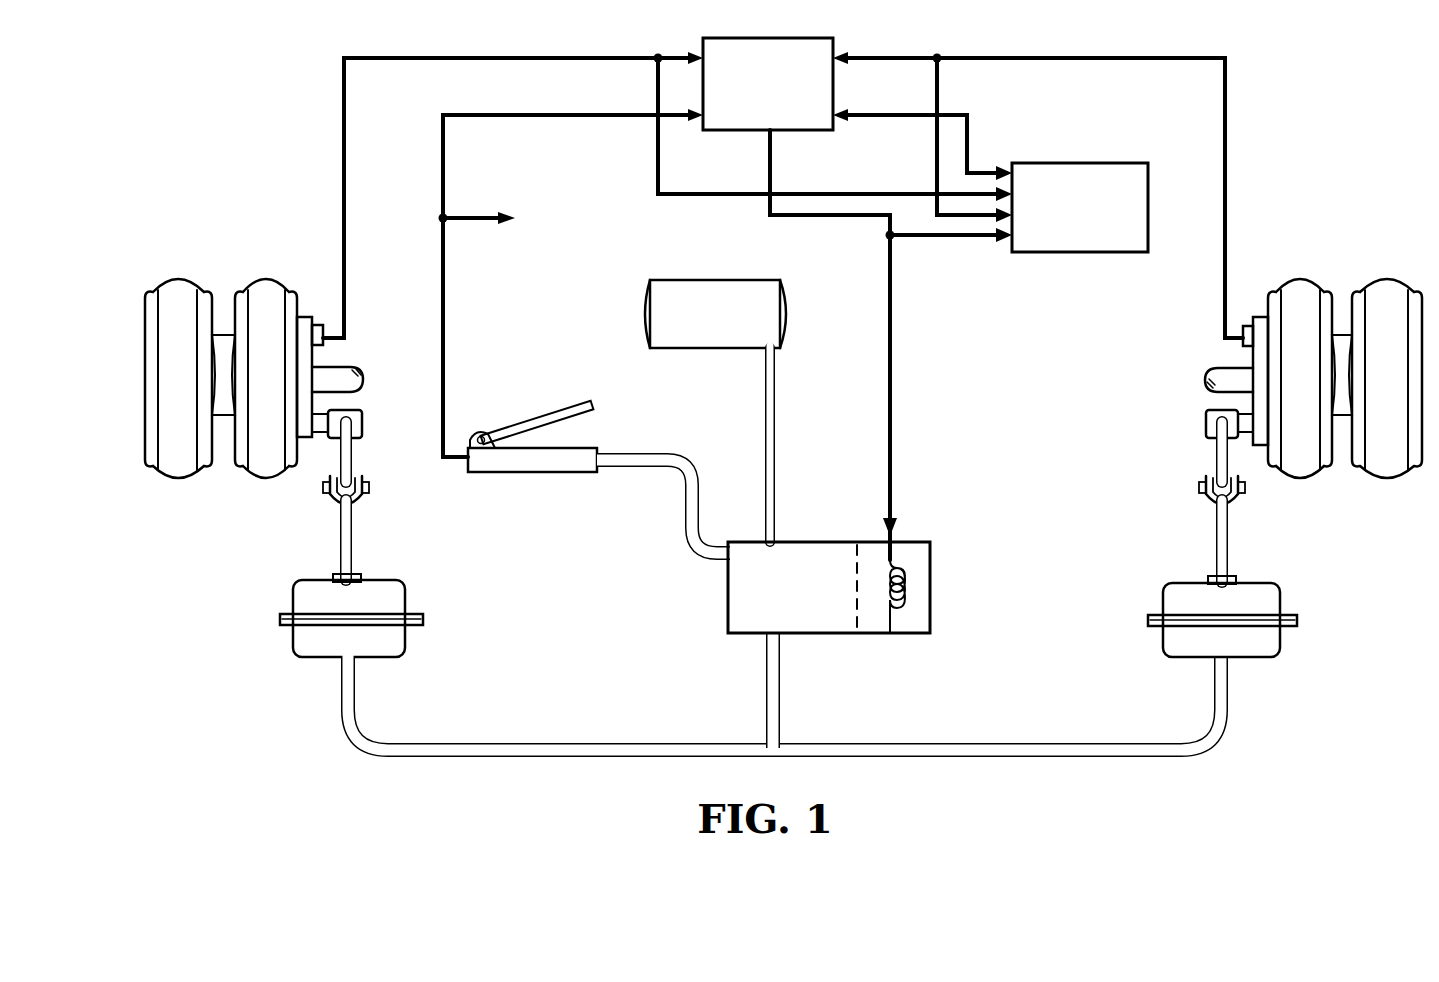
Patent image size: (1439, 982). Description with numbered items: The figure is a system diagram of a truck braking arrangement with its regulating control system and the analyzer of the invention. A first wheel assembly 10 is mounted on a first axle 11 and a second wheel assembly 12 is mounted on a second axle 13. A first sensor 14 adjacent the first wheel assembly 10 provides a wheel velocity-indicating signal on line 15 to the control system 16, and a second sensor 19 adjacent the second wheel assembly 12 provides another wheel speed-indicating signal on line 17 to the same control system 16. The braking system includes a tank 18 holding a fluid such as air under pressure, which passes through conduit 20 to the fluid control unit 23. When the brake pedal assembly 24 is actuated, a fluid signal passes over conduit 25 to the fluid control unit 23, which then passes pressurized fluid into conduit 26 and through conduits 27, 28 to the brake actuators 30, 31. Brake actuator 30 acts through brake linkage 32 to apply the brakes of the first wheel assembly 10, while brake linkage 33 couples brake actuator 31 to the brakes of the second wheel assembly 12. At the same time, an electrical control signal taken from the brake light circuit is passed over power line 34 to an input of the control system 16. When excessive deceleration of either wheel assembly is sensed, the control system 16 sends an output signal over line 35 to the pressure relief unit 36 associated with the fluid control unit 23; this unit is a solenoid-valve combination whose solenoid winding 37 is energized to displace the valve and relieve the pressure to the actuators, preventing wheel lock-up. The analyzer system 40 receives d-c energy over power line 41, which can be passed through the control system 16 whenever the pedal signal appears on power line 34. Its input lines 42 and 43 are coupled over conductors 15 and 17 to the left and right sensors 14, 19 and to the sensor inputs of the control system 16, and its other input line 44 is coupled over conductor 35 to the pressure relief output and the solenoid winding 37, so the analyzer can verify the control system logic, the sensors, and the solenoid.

The first wheel assembly 10 is at (236, 506).
The first axle 11 is at (358, 372).
The second wheel assembly 12 is at (1357, 506).
The second axle 13 is at (1222, 370).
The first sensor 14 is at (319, 323).
The line 15 is at (343, 146).
The control system 16 is at (768, 69).
The line 17 is at (1228, 148).
The tank 18 is at (715, 298).
The second sensor 19 is at (1247, 325).
The conduit 20 is at (765, 433).
The fluid control unit 23 is at (812, 587).
The brake pedal assembly 24 is at (532, 430).
The conduit 25 is at (637, 462).
The conduit 26 is at (794, 690).
The conduit 27 is at (572, 742).
The conduit 28 is at (1000, 742).
The brake actuator 30 is at (289, 589).
The brake actuator 31 is at (1279, 591).
The brake linkage 32 is at (352, 457).
The brake linkage 33 is at (1217, 457).
The power line 34 is at (445, 295).
The line 35 is at (893, 357).
The pressure relief unit 36 is at (926, 579).
The solenoid winding 37 is at (902, 590).
The analyzer system 40 is at (1080, 194).
The power line 41 is at (972, 128).
The input line 42 is at (905, 192).
The input line 43 is at (935, 151).
The input line 44 is at (928, 246).